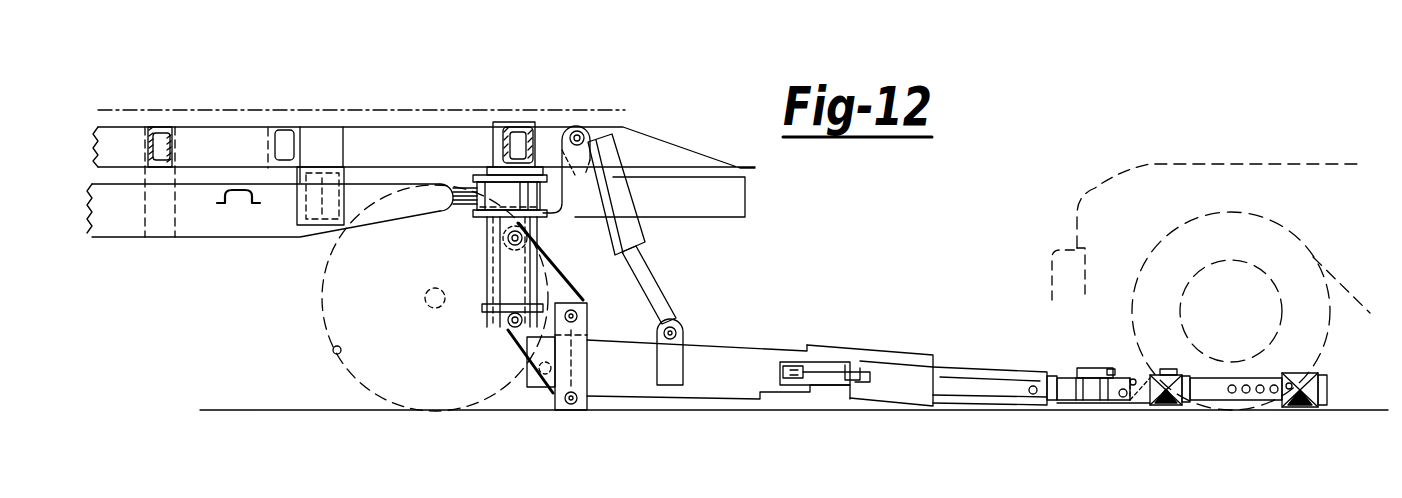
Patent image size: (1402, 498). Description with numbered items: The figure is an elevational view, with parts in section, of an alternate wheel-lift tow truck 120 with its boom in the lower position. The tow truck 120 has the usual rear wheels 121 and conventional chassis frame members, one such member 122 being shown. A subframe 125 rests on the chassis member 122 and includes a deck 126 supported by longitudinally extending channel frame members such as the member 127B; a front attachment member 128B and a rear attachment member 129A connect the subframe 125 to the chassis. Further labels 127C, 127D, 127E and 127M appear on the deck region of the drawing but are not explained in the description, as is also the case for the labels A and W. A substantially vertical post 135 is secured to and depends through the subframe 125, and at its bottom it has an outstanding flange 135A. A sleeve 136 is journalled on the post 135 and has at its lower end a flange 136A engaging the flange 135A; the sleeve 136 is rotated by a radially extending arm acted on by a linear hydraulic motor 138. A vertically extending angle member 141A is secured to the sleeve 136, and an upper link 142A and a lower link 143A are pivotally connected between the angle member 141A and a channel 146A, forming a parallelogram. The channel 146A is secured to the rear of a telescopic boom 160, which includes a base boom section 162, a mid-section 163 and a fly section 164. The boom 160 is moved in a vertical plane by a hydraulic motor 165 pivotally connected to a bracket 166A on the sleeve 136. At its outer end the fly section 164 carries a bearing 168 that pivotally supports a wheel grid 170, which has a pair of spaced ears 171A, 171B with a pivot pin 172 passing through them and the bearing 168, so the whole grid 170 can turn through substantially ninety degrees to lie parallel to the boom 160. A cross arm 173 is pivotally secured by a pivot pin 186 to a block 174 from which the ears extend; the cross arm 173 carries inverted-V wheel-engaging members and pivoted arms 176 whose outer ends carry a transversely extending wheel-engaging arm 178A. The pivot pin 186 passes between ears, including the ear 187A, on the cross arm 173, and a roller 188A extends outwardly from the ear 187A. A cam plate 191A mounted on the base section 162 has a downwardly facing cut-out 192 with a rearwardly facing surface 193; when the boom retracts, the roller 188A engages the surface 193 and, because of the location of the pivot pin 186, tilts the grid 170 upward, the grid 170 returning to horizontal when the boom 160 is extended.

The tow truck 120 is at (770, 232).
The rear wheels 121 is at (332, 358).
The chassis frame member 122 is at (752, 205).
The subframe 125 is at (680, 148).
The deck 126 is at (405, 110).
The longitudinally extending frame member 127B is at (650, 137).
The frame rail mounting slot 127C is at (160, 127).
The frame rail mounting slot 127D is at (268, 128).
The frame rail mounting slot 127E is at (518, 135).
The frame rail mounting plate 127M is at (432, 156).
The front attachment member 128B is at (150, 228).
The rear attachment member 129A is at (298, 223).
The post 135 is at (503, 122).
The outstanding flange 135A is at (490, 305).
The sleeve 136 is at (488, 248).
The flange 136A is at (487, 302).
The linear hydraulic motor 138 is at (420, 213).
The angle member 141A is at (538, 226).
The upper link 142A is at (580, 327).
The lower link 143A is at (527, 350).
The channel 146A is at (645, 279).
The telescopic boom 160 is at (874, 340).
The base boom section 162 is at (720, 367).
The mid-section 163 is at (918, 360).
The fly section 164 is at (988, 365).
The hydraulic motor 165 is at (630, 235).
The bracket 166A is at (580, 138).
The bearing 168 is at (1068, 398).
The wheel grid 170 is at (1240, 414).
The ear 171A is at (1073, 376).
The ear 171B is at (1085, 404).
The pivot pin 172 is at (1093, 403).
The cross arm 173 is at (1185, 378).
The block 174 is at (1126, 376).
The arm 176 is at (1245, 378).
The wheel-engaging arm 178A is at (1322, 407).
The pivot pin 186 is at (1140, 377).
The ear 187A is at (1135, 404).
The roller 188A is at (1134, 402).
The cam plate 191A is at (822, 362).
The cut-out 192 is at (857, 378).
The rearwardly facing surface 193 is at (852, 373).
The towed vehicle A is at (1088, 190).
The towed vehicle wheel W is at (1328, 332).